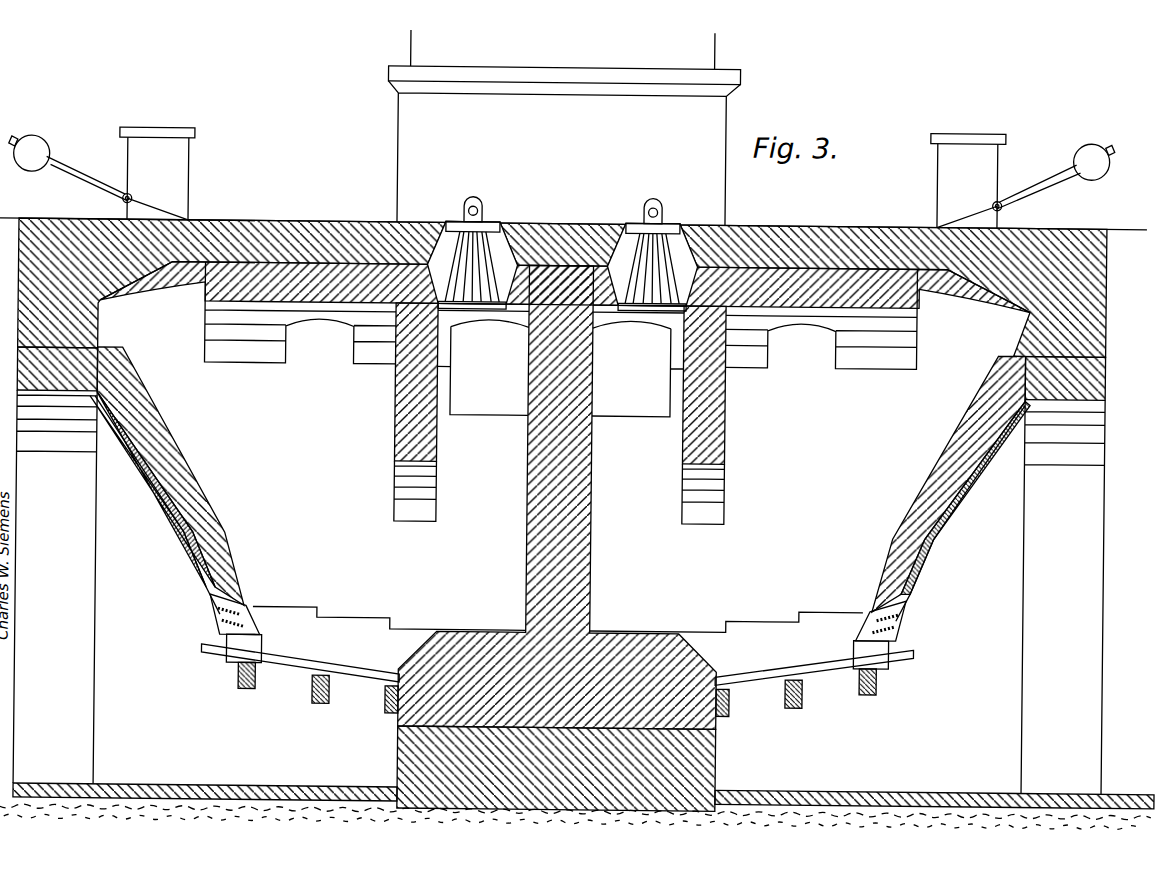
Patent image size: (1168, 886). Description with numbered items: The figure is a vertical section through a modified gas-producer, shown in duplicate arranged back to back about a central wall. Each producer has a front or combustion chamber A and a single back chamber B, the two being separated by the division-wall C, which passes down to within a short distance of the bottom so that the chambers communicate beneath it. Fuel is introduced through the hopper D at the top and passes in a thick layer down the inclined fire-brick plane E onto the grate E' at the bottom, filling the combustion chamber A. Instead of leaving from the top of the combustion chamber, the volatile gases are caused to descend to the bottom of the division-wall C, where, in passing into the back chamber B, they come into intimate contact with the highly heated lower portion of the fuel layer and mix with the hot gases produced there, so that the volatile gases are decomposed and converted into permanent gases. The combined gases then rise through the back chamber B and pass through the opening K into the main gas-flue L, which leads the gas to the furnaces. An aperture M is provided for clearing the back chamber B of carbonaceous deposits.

The combustion chamber A is at (561, 352).
The back chamber B is at (559, 531).
The division-wall C is at (556, 414).
The hopper D is at (561, 177).
The inclined fire-brick plane E is at (558, 509).
The grate E' is at (557, 680).
The opening K is at (560, 360).
The gas-flue L is at (564, 128).
The aperture M is at (562, 249).